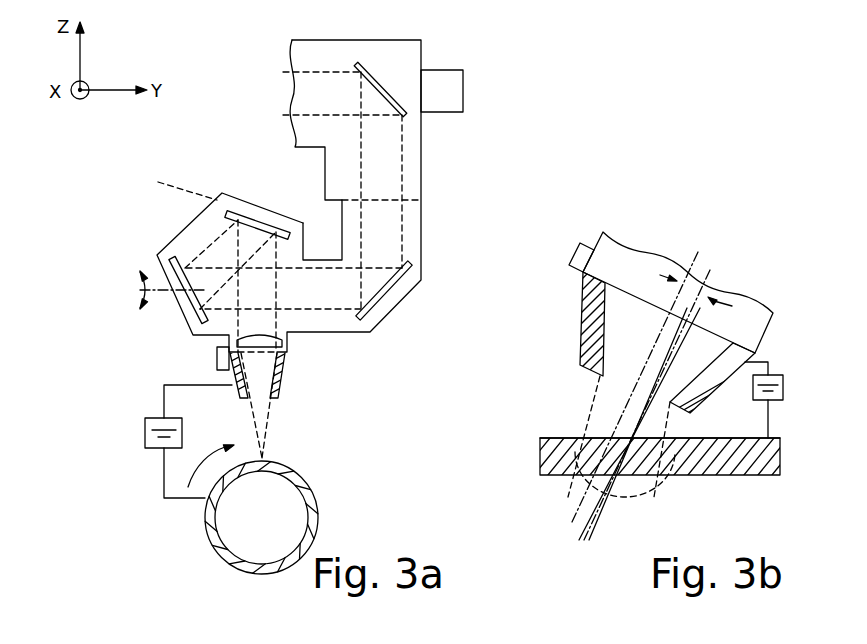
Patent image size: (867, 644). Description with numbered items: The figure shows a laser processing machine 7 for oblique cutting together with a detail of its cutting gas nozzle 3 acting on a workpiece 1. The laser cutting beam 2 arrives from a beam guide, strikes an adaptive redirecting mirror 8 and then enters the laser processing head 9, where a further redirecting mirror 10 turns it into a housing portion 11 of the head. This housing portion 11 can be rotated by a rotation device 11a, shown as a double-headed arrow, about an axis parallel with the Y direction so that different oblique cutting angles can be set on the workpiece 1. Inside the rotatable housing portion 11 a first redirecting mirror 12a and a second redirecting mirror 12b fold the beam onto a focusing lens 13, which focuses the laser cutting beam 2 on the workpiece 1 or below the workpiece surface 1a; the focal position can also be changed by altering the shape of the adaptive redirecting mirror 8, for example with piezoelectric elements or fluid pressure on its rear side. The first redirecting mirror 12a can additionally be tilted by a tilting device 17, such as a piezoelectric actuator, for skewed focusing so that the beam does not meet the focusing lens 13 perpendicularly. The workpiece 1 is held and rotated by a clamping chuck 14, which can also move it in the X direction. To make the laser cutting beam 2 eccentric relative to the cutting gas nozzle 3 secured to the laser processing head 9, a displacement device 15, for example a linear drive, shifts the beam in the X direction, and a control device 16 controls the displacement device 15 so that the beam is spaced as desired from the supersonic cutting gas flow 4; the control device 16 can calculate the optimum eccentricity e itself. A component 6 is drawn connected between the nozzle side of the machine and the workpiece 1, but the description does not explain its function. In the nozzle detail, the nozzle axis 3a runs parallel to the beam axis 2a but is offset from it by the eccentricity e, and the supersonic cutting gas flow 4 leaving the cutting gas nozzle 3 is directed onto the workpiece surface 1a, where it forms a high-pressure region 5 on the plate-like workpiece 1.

In FIG. 3a, the workpiece 1 is at (320, 466).
In FIG. 3b, the workpiece 1 is at (560, 393).
In FIG. 3a, the workpiece surface 1a is at (200, 520).
In FIG. 3b, the workpiece surface 1a is at (558, 430).
In FIG. 3a, the laser cutting beam 2 is at (310, 70).
In FIG. 3b, the laser cutting beam 2 is at (703, 317).
In FIG. 3b, the beam axis 2a is at (715, 280).
In FIG. 3a, the cutting gas nozzle 3 is at (283, 375).
In FIG. 3b, the cutting gas nozzle 3 is at (591, 327).
In FIG. 3b, the nozzle axis 3a is at (688, 252).
In FIG. 3b, the supersonic cutting gas flow 4 is at (578, 447).
In FIG. 3b, the high-pressure region 5 is at (625, 460).
In FIG. 3a, the voltage source 6 is at (152, 427).
In FIG. 3b, the voltage source 6 is at (772, 370).
In FIG. 3a, the laser processing machine 7 is at (215, 100).
In FIG. 3b, the laser processing machine 7 is at (740, 248).
In FIG. 3a, the adaptive redirecting mirror 8 is at (370, 75).
In FIG. 3a, the laser processing head 9 is at (445, 258).
In FIG. 3a, the redirecting mirror 10 is at (390, 287).
In FIG. 3a, the housing portion 11 is at (152, 228).
In FIG. 3a, the rotation device 11a is at (128, 291).
In FIG. 3a, the first redirecting mirror 12a is at (246, 212).
In FIG. 3a, the second redirecting mirror 12b is at (188, 303).
In FIG. 3a, the focusing lens 13 is at (290, 343).
In FIG. 3a, the clamping chuck 14 is at (210, 452).
In FIG. 3a, the displacement device 15 is at (217, 352).
In FIG. 3b, the displacement device 15 is at (580, 256).
In FIG. 3a, the control device 16 is at (456, 93).
In FIG. 3a, the tilting device 17 is at (183, 190).
In FIG. 3b, the eccentricity e is at (696, 290).